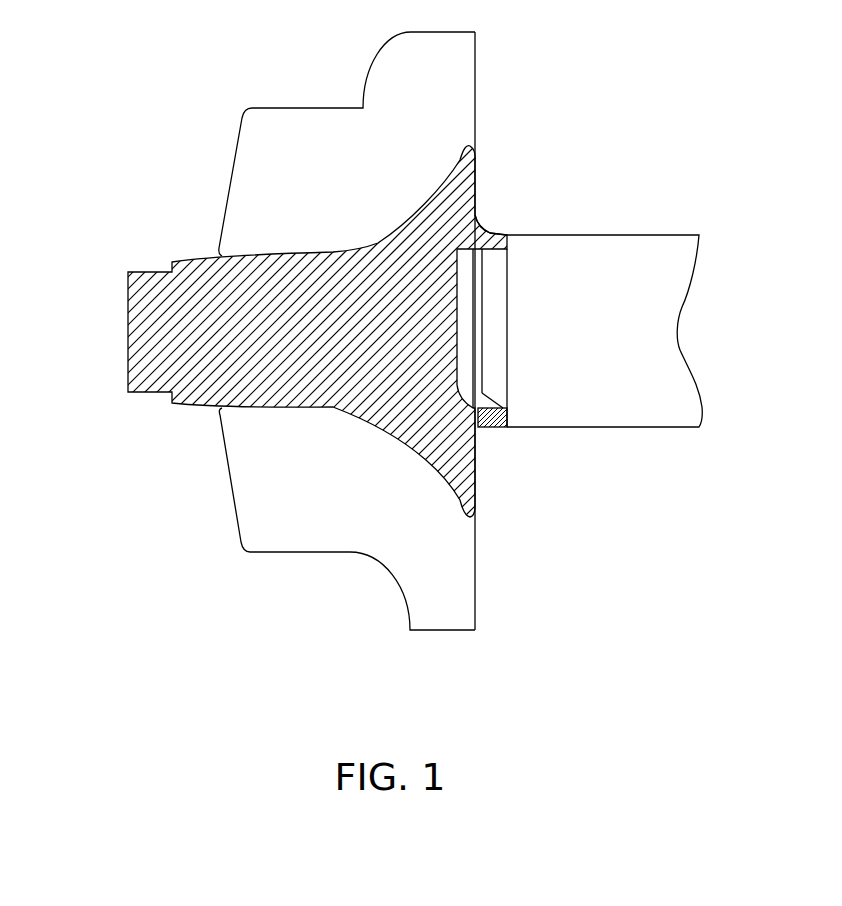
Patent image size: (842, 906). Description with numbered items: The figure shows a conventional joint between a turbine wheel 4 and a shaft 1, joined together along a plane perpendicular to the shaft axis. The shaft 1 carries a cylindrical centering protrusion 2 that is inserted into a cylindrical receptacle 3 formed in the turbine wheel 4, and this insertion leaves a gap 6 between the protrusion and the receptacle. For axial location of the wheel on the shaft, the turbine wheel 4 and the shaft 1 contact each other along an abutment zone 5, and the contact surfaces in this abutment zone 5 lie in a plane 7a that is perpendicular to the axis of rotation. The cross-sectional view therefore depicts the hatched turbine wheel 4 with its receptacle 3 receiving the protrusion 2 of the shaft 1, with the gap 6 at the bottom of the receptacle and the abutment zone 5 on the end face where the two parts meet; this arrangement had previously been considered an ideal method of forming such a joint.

The shaft 1 is at (653, 257).
The cylindrical centering protrusion 2 is at (490, 270).
The cylindrical receptacle 3 is at (481, 429).
The turbine wheel 4 is at (466, 173).
The abutment zone 5 is at (508, 330).
The gap 6 is at (490, 417).
The plane 7a is at (508, 247).